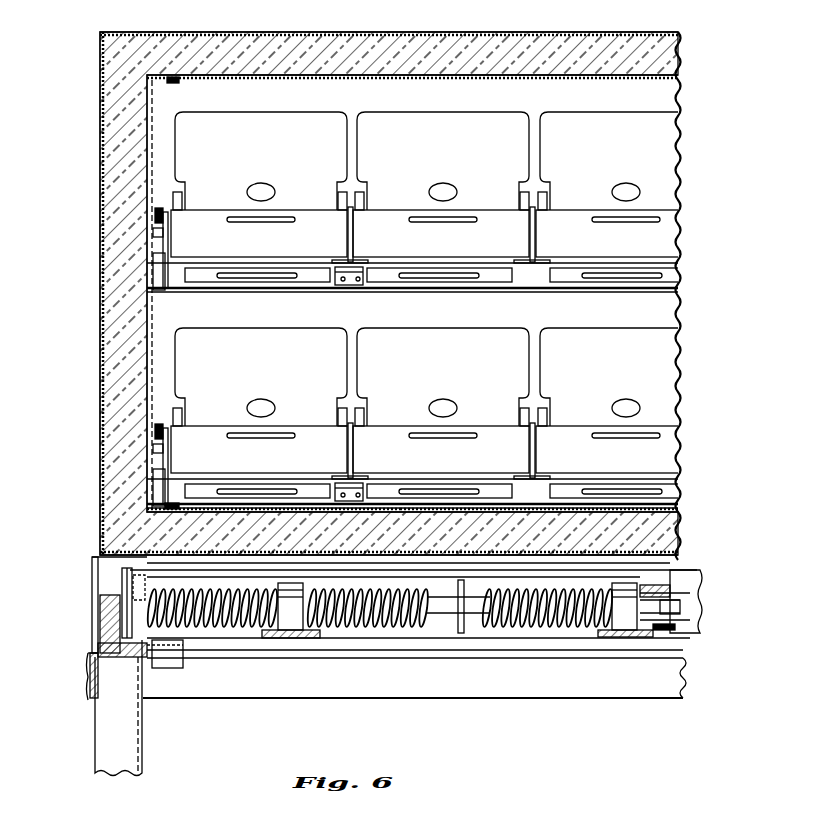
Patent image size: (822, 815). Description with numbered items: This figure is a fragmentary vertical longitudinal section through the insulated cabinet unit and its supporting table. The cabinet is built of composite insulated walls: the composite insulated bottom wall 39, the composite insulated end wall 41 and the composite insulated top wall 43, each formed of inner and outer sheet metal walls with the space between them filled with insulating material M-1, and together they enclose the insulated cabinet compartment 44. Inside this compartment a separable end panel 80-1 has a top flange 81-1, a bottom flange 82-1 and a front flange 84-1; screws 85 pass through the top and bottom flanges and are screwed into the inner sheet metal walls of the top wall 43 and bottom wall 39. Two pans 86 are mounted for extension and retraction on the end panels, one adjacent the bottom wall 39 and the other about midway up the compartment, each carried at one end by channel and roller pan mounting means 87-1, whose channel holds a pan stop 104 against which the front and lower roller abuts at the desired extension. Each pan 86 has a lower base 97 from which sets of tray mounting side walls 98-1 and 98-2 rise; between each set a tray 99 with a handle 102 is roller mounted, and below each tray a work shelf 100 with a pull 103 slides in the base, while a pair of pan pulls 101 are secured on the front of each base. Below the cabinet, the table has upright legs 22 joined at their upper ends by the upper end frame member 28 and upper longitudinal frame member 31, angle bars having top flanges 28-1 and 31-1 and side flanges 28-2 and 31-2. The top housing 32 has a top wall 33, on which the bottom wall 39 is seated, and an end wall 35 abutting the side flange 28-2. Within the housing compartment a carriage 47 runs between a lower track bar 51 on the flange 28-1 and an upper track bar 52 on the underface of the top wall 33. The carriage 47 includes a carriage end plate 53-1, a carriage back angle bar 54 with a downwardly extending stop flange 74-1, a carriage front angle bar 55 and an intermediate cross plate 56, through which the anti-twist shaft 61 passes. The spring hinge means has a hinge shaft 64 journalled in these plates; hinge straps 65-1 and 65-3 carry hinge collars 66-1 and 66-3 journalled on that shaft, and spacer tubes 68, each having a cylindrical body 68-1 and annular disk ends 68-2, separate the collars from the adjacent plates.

The insulating material M-1 is at (303, 43).
The composite insulated top wall 43 is at (457, 34).
The composite insulated end wall 41 is at (103, 170).
The screws 85 is at (176, 84).
The top flange 81-1 is at (198, 80).
The separable end panel 80-1 is at (150, 135).
The tray 99 is at (306, 211).
The tray mounting side wall 98-1 is at (183, 236).
The handle 102 is at (253, 223).
The tray mounting side wall 98-2 is at (347, 238).
The work shelf 100 is at (573, 268).
The pull 103 is at (622, 272).
The pan stop 104 is at (163, 276).
The channel and roller pan mounting means 87-1 is at (166, 292).
The pan 86 is at (205, 289).
The lower base 97 is at (322, 292).
The pan pulls 101 is at (359, 287).
The insulated cabinet compartment 44 is at (608, 302).
The front flange 84-1 is at (148, 364).
The bottom flange 82-1 is at (183, 508).
The composite insulated bottom wall 39 is at (648, 512).
The upper track bar 52 is at (130, 553).
The carriage 47 is at (121, 576).
The top wall 33 is at (673, 563).
The top housing 32 is at (91, 580).
The cylindrical body 68-1 is at (660, 593).
The carriage front angle bar 55 is at (684, 595).
The end wall 35 is at (100, 594).
The intermediate cross plate 56 is at (457, 600).
The shaft 61 is at (692, 617).
The carriage end plate 53-1 is at (127, 600).
The carriage back angle bar 54 is at (705, 630).
The top flange 28-1 is at (92, 656).
The spacer tubes 68 is at (475, 618).
The hinge collar 66-1 is at (282, 640).
The end hinge strap 65-1 is at (289, 632).
The top flange 31-1 is at (487, 655).
The hinge collar 66-3 is at (621, 640).
The annular disk ends 68-2 is at (657, 632).
The hinge shaft 64 is at (695, 677).
The upper end frame member 28 is at (91, 672).
The lower track bar 51 is at (130, 657).
The stop flange 74-1 is at (176, 666).
The side flange 28-2 is at (88, 689).
The upper longitudinal frame member 31 is at (440, 690).
The table leg 22 is at (140, 770).
The center hinge strap 65-3 is at (632, 634).
The side flange 31-2 is at (373, 700).